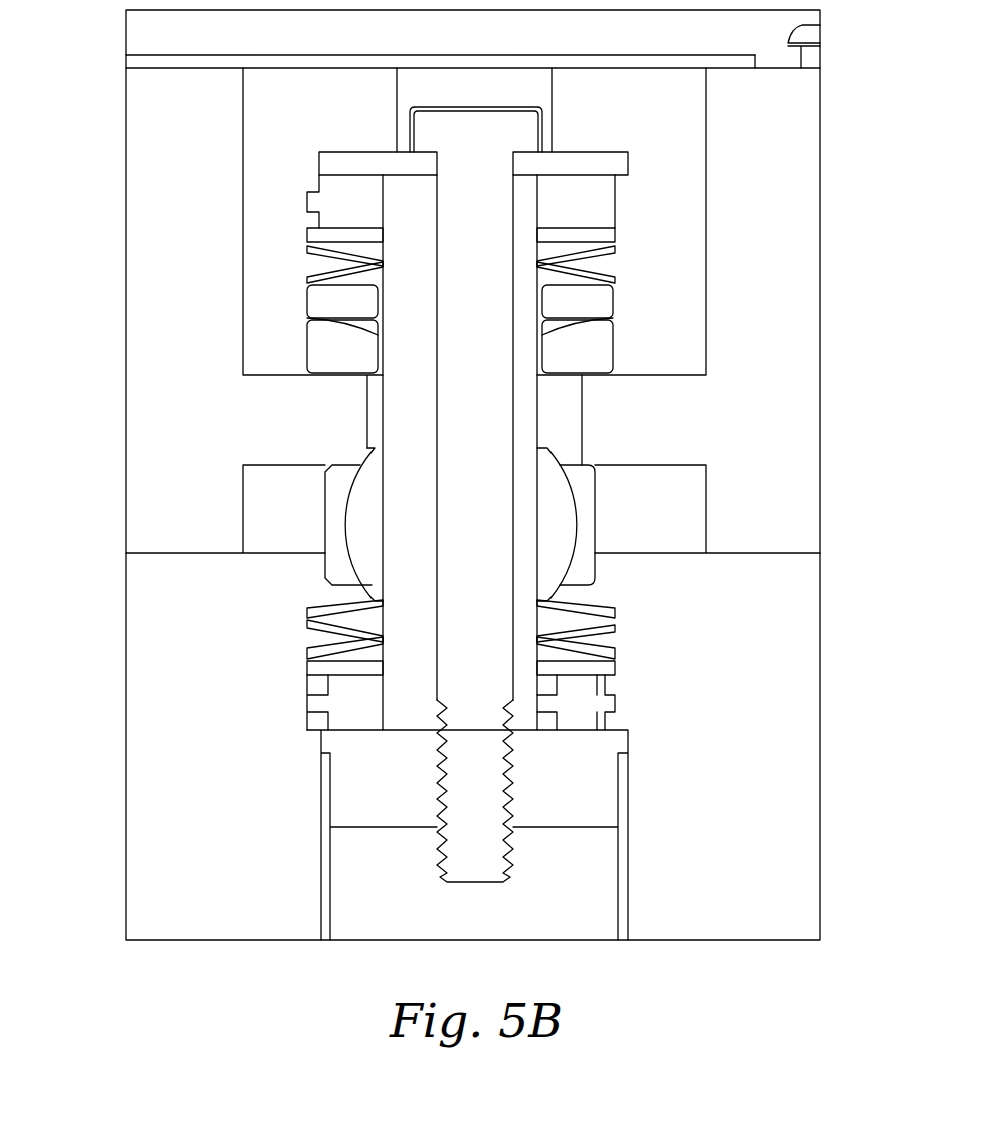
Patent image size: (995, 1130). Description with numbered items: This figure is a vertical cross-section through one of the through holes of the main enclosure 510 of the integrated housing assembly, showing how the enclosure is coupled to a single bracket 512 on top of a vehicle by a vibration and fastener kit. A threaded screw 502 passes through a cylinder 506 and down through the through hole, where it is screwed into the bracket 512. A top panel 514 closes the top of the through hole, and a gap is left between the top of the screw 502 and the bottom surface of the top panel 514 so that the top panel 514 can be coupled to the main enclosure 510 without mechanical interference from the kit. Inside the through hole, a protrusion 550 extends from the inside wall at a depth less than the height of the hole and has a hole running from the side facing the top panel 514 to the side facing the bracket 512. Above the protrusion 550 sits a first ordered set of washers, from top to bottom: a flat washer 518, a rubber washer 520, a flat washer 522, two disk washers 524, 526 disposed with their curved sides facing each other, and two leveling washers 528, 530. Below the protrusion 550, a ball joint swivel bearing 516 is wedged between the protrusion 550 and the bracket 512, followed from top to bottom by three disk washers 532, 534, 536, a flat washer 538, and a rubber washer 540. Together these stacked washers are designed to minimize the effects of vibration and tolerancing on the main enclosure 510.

The threaded screw 502 is at (445, 127).
The cylinder 506 is at (417, 428).
The main enclosure 510 is at (196, 258).
The bracket 512 is at (240, 755).
The top panel 514 is at (194, 63).
The ball joint swivel bearing 516 is at (363, 532).
The flat washer 518 is at (632, 161).
The rubber washer 520 is at (618, 196).
The flat washer 522 is at (618, 237).
The disk washer 524 is at (618, 253).
The disk washer 526 is at (618, 280).
The leveling washer 528 is at (618, 307).
The leveling washer 530 is at (618, 357).
The disk washer 532 is at (618, 613).
The disk washer 534 is at (618, 629).
The disk washer 536 is at (618, 652).
The flat washer 538 is at (618, 674).
The rubber washer 540 is at (618, 707).
The protrusion 550 is at (658, 428).